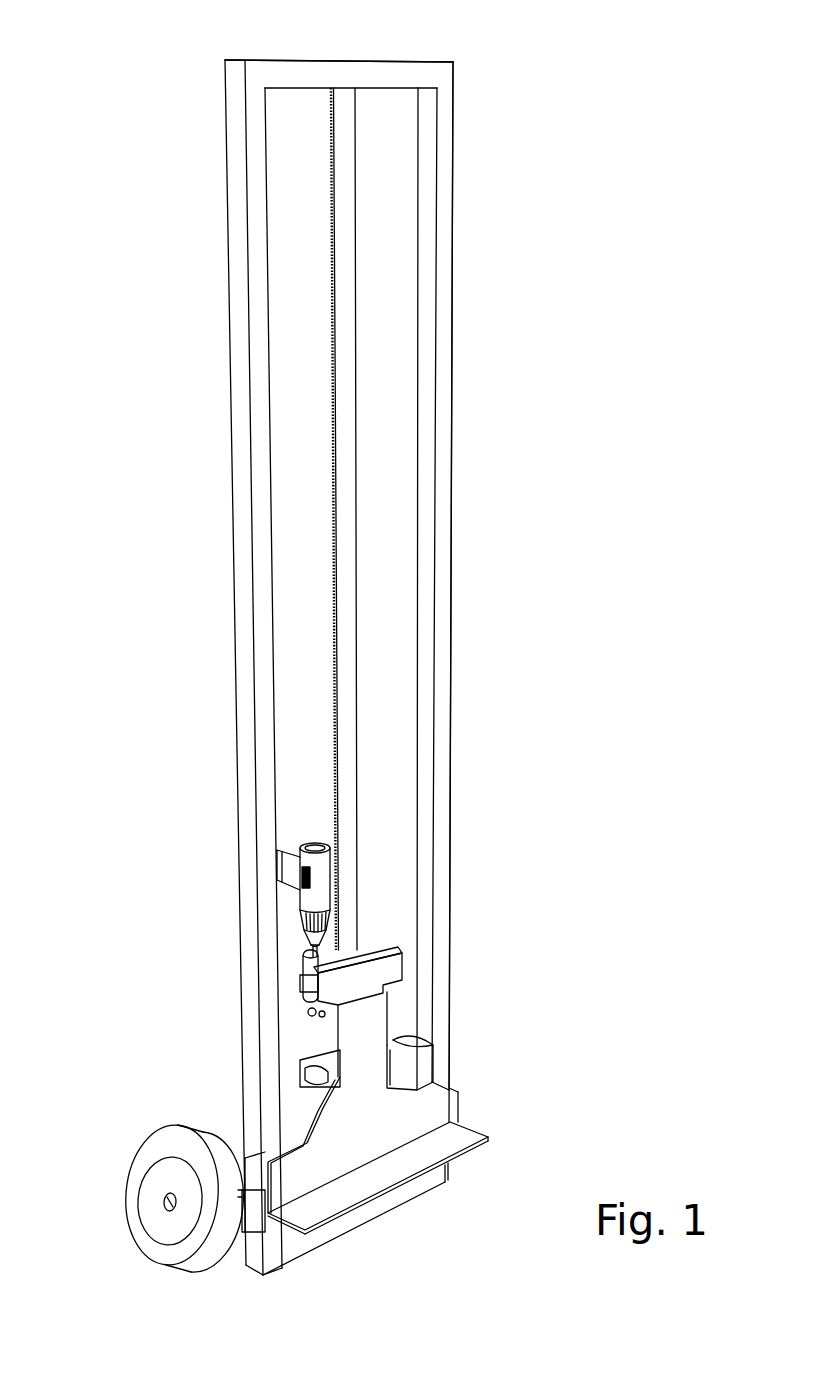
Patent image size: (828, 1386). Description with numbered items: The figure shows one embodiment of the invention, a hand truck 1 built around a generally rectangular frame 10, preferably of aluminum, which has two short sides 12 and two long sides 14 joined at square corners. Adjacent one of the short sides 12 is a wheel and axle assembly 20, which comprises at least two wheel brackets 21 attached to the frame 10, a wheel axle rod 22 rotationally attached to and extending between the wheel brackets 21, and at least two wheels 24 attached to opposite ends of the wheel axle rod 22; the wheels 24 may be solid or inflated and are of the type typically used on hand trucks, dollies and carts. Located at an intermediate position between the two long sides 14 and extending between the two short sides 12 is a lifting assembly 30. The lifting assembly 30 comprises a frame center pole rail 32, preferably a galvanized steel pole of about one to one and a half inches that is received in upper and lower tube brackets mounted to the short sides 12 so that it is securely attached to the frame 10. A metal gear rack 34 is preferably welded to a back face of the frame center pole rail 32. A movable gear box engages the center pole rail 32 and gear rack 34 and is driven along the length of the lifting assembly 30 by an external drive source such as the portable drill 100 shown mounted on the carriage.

The hand truck 1 is at (172, 627).
The frame 10 is at (478, 421).
The short side 12 is at (368, 58).
The long side 14 is at (445, 131).
The wheel and axle assembly 20 is at (202, 1043).
The wheel bracket 21 is at (247, 1264).
The wheel axle rod 22 is at (243, 1156).
The wheel 24 is at (172, 1124).
The lifting assembly 30 is at (388, 898).
The frame center pole rail 32 is at (345, 315).
The gear rack 34 is at (322, 258).
The portable drill 100 is at (299, 845).